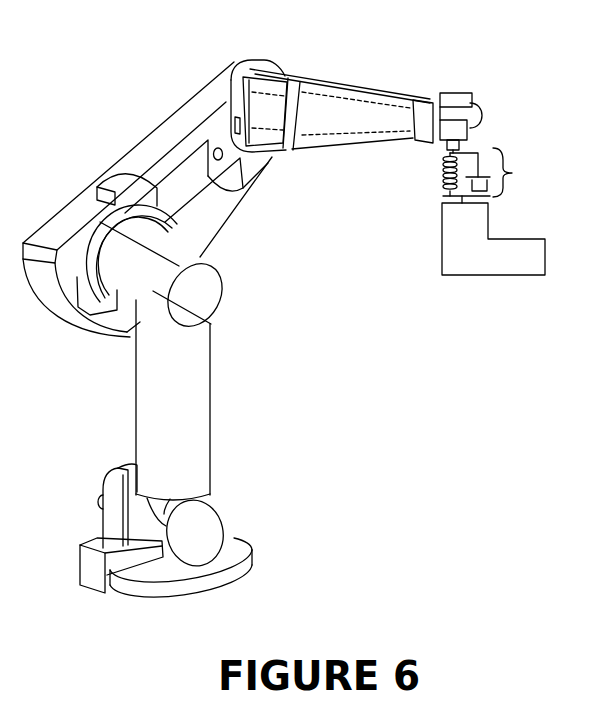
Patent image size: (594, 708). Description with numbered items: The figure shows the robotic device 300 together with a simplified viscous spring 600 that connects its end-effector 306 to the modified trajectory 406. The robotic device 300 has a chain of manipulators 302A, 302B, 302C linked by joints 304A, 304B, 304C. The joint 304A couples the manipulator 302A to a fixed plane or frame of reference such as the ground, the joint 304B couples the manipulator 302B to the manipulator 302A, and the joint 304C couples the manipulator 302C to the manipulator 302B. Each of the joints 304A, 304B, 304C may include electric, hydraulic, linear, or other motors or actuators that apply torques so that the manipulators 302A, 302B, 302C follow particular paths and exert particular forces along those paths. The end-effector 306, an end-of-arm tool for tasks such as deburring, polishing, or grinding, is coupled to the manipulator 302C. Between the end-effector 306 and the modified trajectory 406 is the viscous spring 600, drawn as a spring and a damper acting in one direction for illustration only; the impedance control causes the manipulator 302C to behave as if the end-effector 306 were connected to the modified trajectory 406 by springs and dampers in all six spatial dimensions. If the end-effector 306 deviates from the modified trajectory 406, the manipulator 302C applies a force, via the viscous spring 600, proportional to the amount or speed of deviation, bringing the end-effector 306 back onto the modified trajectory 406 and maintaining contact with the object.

The robotic device 300 is at (86, 84).
The manipulator 302A is at (199, 417).
The manipulator 302B is at (159, 125).
The manipulator 302C is at (348, 129).
The joint 304A is at (207, 523).
The joint 304B is at (207, 295).
The joint 304C is at (262, 60).
The end-effector 306 is at (459, 93).
The viscous spring 600 is at (522, 170).
The modified trajectory 406 is at (533, 237).